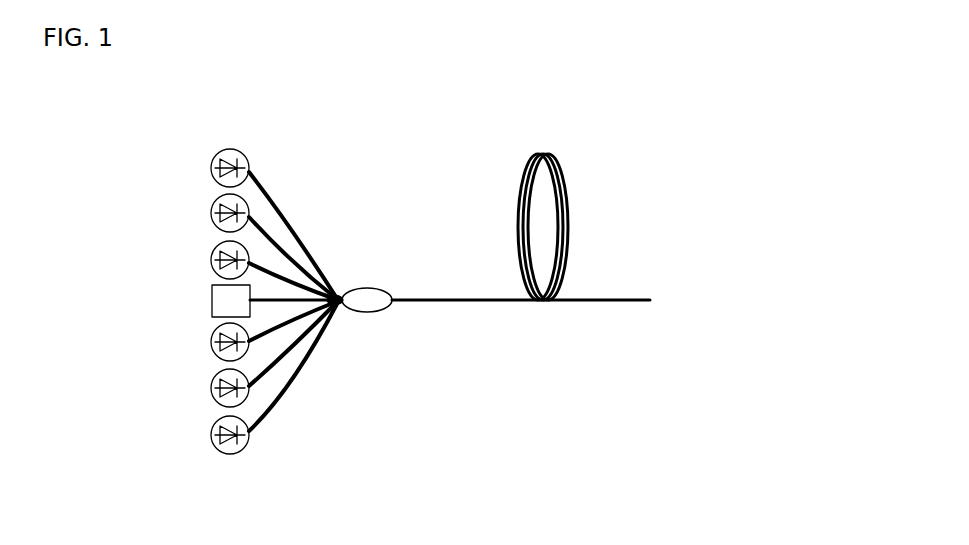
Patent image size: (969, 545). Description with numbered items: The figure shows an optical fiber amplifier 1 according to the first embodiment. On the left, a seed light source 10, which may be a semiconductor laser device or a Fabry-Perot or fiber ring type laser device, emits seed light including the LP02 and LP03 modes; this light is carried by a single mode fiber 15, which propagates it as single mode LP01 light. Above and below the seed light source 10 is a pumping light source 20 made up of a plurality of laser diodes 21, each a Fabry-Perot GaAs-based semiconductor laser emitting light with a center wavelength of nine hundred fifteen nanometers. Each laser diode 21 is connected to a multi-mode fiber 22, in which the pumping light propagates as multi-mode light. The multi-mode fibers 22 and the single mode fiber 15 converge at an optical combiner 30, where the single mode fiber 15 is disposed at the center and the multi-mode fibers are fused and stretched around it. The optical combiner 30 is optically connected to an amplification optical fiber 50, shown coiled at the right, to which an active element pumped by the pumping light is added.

The optical fiber amplifier 1 is at (667, 144).
The seed light source 10 is at (253, 305).
The single mode fiber 15 is at (311, 290).
The pumping light source 20 is at (138, 234).
The laser diode 21 is at (212, 178).
The multi-mode fiber 22 is at (257, 180).
The optical combiner 30 is at (372, 303).
The amplification optical fiber 50 is at (563, 298).